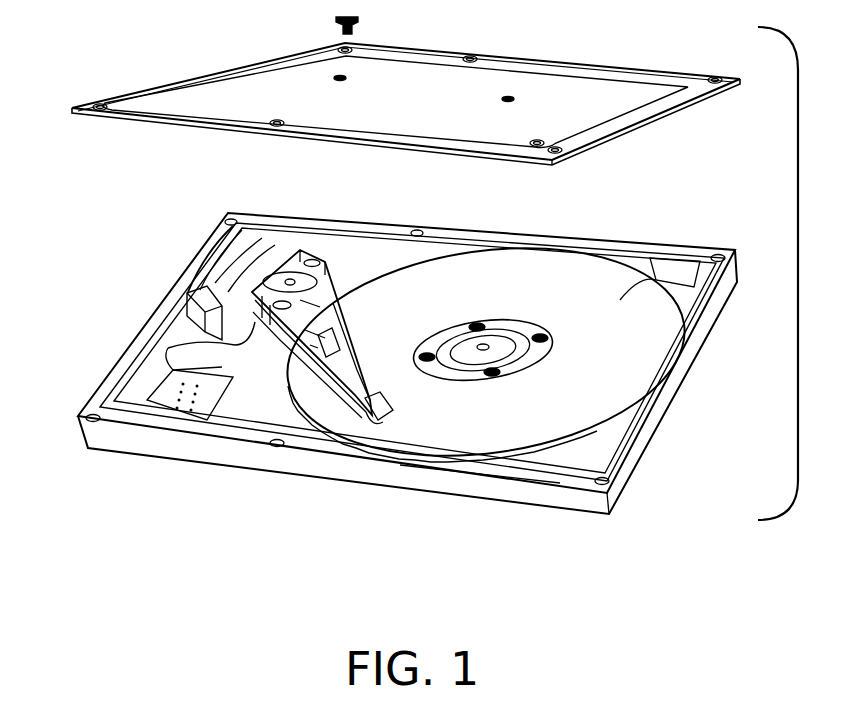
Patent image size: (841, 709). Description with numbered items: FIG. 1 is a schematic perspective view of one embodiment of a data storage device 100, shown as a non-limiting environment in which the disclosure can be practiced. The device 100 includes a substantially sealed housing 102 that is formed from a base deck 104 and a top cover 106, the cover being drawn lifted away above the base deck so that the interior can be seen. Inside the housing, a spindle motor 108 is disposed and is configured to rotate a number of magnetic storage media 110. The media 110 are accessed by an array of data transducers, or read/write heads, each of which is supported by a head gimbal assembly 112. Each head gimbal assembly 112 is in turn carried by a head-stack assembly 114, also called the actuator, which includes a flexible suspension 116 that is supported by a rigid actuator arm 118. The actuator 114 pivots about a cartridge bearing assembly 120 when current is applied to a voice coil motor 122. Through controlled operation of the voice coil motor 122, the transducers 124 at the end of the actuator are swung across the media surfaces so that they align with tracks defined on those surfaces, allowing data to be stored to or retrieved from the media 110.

The data storage device 100 is at (125, 60).
The housing 102 is at (118, 220).
The base deck 104 is at (668, 405).
The top cover 106 is at (505, 72).
The spindle motor 108 is at (497, 343).
The magnetic storage media 110 is at (547, 467).
The head gimbal assembly 112 is at (378, 404).
The head-stack assembly 114 is at (352, 317).
The flexible suspension 116 is at (365, 386).
The actuator arm 118 is at (352, 345).
The cartridge bearing assembly 120 is at (314, 264).
The voice coil motor 122 is at (291, 276).
The transducers 124 is at (370, 415).